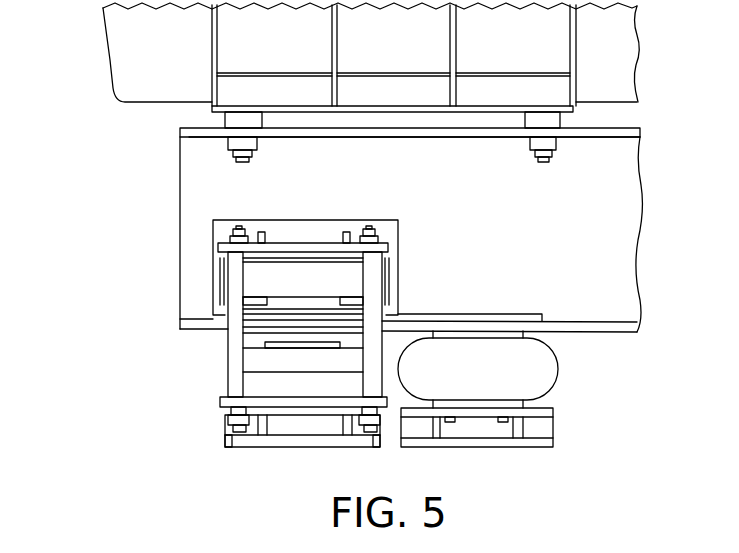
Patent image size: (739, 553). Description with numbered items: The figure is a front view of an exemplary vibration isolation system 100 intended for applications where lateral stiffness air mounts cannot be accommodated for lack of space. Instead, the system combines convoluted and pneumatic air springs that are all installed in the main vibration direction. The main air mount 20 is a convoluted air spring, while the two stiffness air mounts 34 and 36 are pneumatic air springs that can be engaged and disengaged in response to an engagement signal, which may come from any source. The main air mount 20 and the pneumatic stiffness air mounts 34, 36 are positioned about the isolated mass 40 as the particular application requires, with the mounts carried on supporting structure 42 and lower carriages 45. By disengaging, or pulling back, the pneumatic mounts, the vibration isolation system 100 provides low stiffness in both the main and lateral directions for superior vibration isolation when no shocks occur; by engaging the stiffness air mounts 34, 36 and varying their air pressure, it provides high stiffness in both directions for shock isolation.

The main air mount 20 is at (558, 370).
The stiffness air mount 34 is at (270, 285).
The stiffness air mount 36 is at (265, 361).
The isolated mass 40 is at (113, 45).
The base plate 42 is at (476, 314).
The lower carriage 45 is at (298, 447).
The vibration isolation system 100 is at (158, 367).